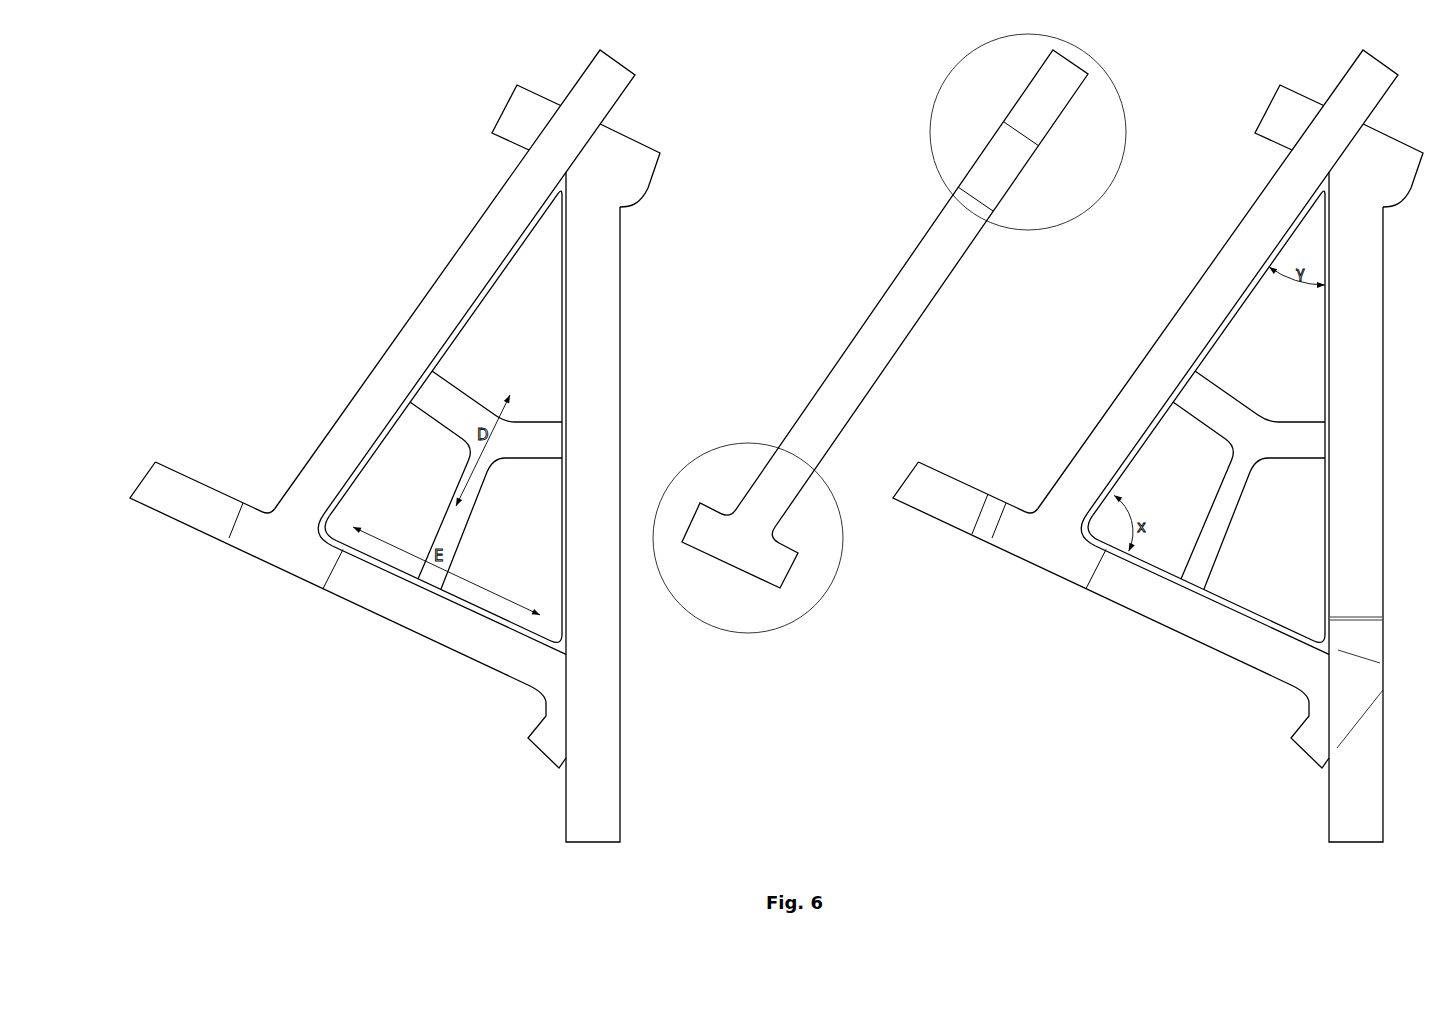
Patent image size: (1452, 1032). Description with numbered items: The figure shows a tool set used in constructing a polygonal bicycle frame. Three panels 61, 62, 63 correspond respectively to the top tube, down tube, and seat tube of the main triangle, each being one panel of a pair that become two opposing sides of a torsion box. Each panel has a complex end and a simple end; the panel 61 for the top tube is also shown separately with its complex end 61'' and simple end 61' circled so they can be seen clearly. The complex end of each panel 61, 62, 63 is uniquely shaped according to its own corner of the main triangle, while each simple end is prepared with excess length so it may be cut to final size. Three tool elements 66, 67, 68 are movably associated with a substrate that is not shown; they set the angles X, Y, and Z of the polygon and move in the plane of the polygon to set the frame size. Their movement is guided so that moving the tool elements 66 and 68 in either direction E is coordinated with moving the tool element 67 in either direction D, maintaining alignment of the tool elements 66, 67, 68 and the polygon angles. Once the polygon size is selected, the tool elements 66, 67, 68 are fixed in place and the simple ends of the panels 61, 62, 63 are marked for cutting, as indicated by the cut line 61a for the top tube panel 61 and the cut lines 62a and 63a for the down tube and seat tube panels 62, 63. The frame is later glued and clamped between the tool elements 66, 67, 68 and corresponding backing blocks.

The panel 61 is at (836, 333).
The simple end 61' is at (981, 97).
The complex end 61'' is at (815, 529).
The cut line 61a is at (1051, 129).
The panel 62 is at (593, 383).
The cut line 62a is at (1445, 647).
The panel 63 is at (410, 634).
The cut line 63a is at (990, 493).
The tool element 66 is at (816, 490).
The tool element 67 is at (878, 375).
The tool element 68 is at (883, 523).